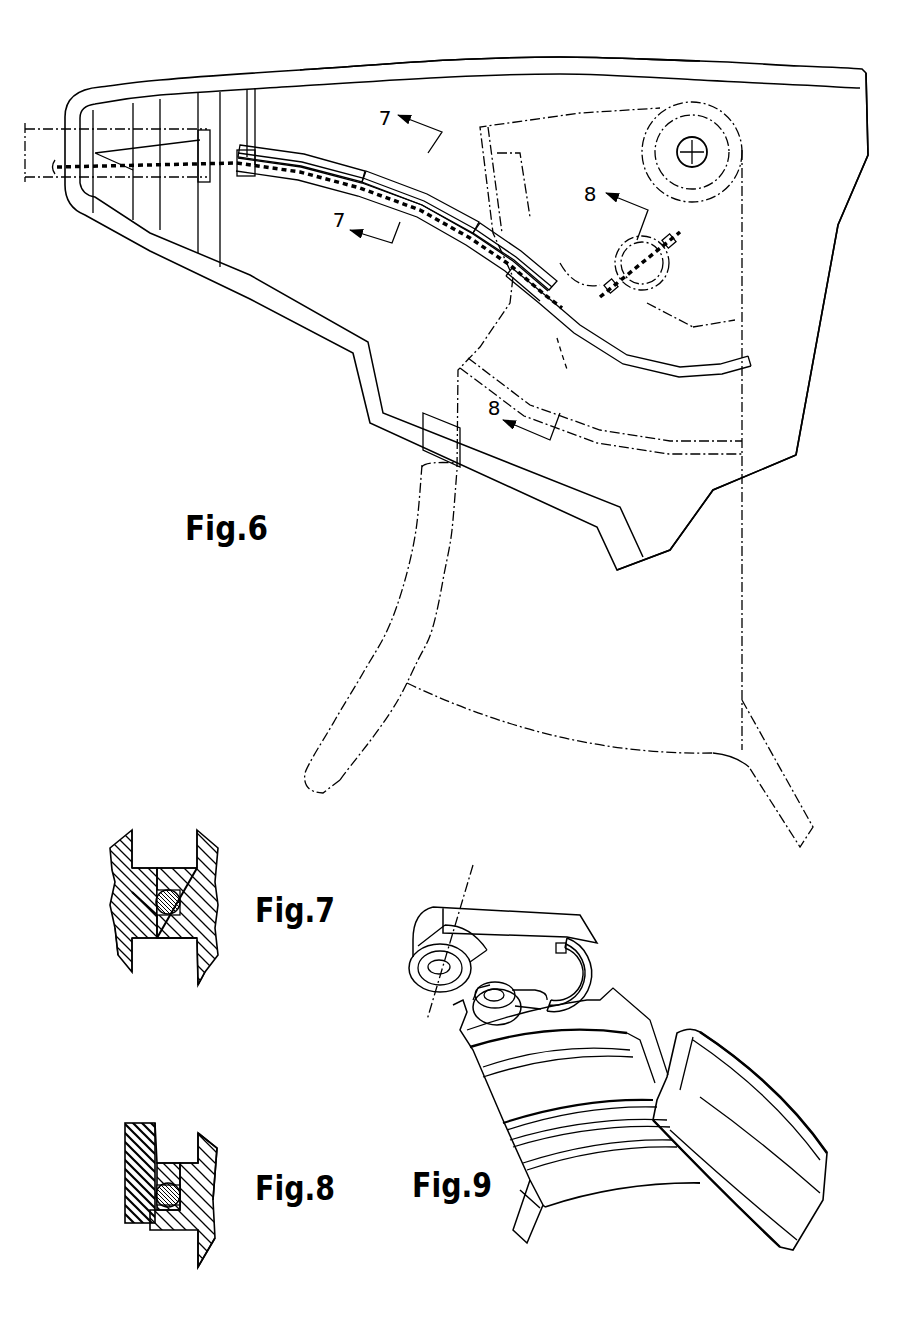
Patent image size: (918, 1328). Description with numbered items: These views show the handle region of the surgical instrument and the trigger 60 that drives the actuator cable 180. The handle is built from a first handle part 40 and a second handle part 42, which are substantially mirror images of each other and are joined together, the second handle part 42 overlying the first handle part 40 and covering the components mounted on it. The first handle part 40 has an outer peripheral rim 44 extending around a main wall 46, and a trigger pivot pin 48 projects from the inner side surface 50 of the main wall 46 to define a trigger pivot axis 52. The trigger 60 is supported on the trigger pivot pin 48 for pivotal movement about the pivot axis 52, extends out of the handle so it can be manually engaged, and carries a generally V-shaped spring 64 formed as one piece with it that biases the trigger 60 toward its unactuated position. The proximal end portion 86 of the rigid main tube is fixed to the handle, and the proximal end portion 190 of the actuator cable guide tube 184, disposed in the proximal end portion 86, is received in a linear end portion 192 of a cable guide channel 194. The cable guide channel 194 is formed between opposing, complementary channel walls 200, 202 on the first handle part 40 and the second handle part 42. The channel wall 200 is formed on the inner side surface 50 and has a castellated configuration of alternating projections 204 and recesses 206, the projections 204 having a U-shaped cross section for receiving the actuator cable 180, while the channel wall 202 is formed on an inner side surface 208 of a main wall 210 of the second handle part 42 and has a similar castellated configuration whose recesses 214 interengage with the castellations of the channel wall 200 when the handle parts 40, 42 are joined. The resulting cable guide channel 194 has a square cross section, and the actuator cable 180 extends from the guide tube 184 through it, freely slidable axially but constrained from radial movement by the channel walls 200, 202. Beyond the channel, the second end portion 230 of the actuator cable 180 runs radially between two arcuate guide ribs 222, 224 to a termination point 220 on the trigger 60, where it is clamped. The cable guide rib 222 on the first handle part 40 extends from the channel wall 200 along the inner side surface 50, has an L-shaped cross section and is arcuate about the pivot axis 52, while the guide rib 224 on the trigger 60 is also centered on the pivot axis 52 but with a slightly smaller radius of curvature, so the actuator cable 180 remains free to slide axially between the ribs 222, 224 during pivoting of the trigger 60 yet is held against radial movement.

In FIG. 6, the first handle part 40 is at (760, 65).
In FIG. 7, the first handle part 40 is at (221, 863).
In FIG. 8, the first handle part 40 is at (217, 1225).
In FIG. 7, the second handle part 42 is at (103, 862).
In FIG. 6, the outer peripheral rim 44 is at (476, 63).
In FIG. 6, the main wall 46 is at (806, 294).
In FIG. 7, the main wall 46 is at (210, 963).
In FIG. 8, the main wall 46 is at (207, 1147).
In FIG. 6, the trigger pivot pin 48 is at (702, 163).
In FIG. 6, the inner side surface 50 is at (815, 207).
In FIG. 7, the inner side surface 50 is at (193, 977).
In FIG. 8, the inner side surface 50 is at (193, 1250).
In FIG. 6, the trigger pivot axis 52 is at (685, 145).
In FIG. 9, the trigger pivot axis 52 is at (427, 1007).
In FIG. 6, the trigger 60 is at (398, 593).
In FIG. 8, the trigger 60 is at (125, 1183).
In FIG. 9, the trigger 60 is at (733, 1063).
In FIG. 9, the spring 64 is at (527, 1230).
In FIG. 6, the proximal end portion 86 is at (165, 125).
In FIG. 6, the actuator cable 180 is at (110, 178).
In FIG. 7, the actuator cable 180 is at (156, 900).
In FIG. 8, the actuator cable 180 is at (168, 1165).
In FIG. 6, the actuator cable guide tube 184 is at (40, 183).
In FIG. 6, the proximal end portion 190 is at (227, 220).
In FIG. 6, the linear end portion 192 is at (258, 160).
In FIG. 6, the cable guide channel 194 is at (296, 200).
In FIG. 7, the cable guide channel 194 is at (153, 917).
In FIG. 6, the channel wall 200 is at (396, 152).
In FIG. 7, the channel wall 200 is at (168, 840).
In FIG. 7, the channel wall 202 is at (148, 942).
In FIG. 6, the projections 204 is at (350, 165).
In FIG. 7, the projections 204 is at (177, 880).
In FIG. 6, the recesses 206 is at (292, 150).
In FIG. 7, the inner side surface 208 is at (138, 975).
In FIG. 7, the main wall 210 is at (125, 955).
In FIG. 7, the recesses 214 is at (160, 855).
In FIG. 6, the termination point 220 is at (672, 266).
In FIG. 9, the termination point 220 is at (492, 1014).
In FIG. 6, the guide rib 222 is at (622, 367).
In FIG. 8, the guide rib 222 is at (163, 1235).
In FIG. 6, the guide rib 224 is at (549, 180).
In FIG. 8, the guide rib 224 is at (163, 1160).
In FIG. 9, the guide rib 224 is at (565, 928).
In FIG. 6, the second end portion 230 is at (572, 367).